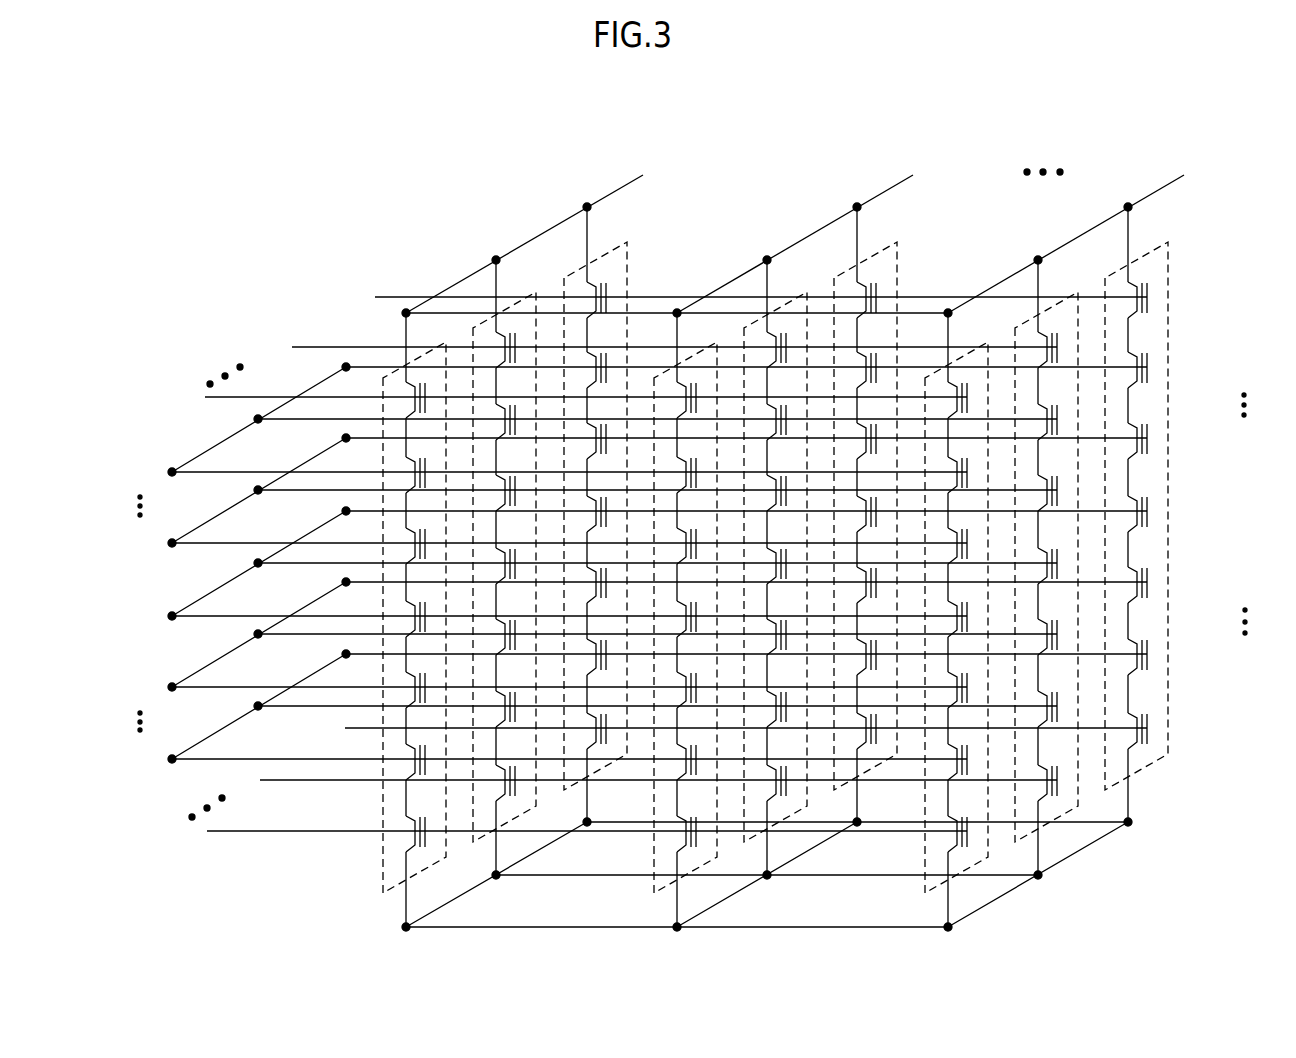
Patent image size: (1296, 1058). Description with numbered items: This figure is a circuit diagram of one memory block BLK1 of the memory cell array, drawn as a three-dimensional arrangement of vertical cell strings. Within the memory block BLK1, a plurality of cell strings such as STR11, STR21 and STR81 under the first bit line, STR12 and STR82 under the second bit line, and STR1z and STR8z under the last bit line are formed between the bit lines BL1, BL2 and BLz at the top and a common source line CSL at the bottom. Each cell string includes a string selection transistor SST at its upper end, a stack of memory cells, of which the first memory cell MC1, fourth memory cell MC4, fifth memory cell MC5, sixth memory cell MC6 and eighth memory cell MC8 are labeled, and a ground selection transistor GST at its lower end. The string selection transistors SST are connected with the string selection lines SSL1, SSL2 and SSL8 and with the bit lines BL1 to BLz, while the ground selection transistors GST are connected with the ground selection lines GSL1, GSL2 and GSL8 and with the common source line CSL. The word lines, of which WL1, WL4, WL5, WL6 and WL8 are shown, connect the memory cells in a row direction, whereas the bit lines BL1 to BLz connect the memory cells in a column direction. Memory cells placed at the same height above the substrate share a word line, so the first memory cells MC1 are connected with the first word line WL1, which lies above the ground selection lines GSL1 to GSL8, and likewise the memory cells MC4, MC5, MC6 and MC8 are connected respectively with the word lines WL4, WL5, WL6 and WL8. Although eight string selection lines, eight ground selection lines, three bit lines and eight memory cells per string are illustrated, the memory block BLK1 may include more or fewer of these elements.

The memory block BLK1 is at (390, 167).
The first bit line BL1 is at (533, 231).
The second bit line BL2 is at (802, 231).
The z-th bit line BLz is at (1076, 231).
The cell string STR11 is at (609, 514).
The cell string STR21 is at (515, 567).
The cell string STR81 is at (425, 620).
The cell string STR12 is at (881, 514).
The cell string STR82 is at (694, 620).
The cell string STR8z is at (965, 620).
The cell string STR1z is at (1156, 514).
The first string selection line SSL1 is at (733, 295).
The second string selection line SSL2 is at (646, 348).
The eighth string selection line SSL8 is at (557, 403).
The eighth word line WL8 is at (632, 422).
The sixth word line WL6 is at (632, 493).
The fifth word line WL5 is at (620, 575).
The fourth word line WL4 is at (631, 638).
The first word line WL1 is at (631, 712).
The first ground selection line GSL1 is at (717, 735).
The second ground selection line GSL2 is at (632, 781).
The eighth ground selection line GSL8 is at (552, 833).
The common source line CSL is at (738, 878).
The string selection transistor SST is at (1150, 295).
The eighth memory cell MC8 is at (1150, 366).
The sixth memory cell MC6 is at (1150, 436).
The fifth memory cell MC5 is at (1150, 509).
The fourth memory cell MC4 is at (1150, 580).
The first memory cell MC1 is at (1150, 652).
The ground selection transistor GST is at (1150, 725).